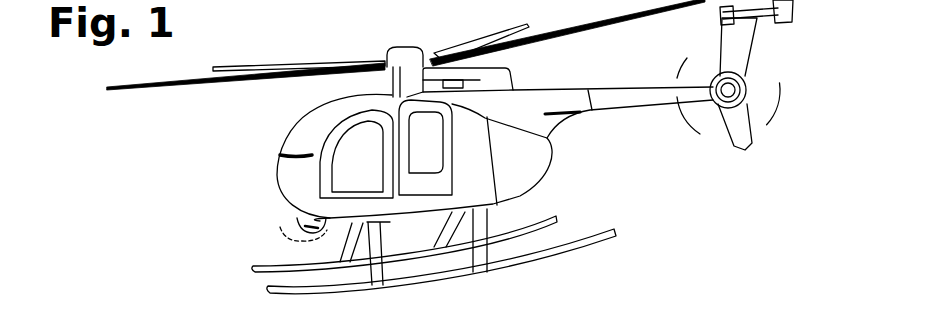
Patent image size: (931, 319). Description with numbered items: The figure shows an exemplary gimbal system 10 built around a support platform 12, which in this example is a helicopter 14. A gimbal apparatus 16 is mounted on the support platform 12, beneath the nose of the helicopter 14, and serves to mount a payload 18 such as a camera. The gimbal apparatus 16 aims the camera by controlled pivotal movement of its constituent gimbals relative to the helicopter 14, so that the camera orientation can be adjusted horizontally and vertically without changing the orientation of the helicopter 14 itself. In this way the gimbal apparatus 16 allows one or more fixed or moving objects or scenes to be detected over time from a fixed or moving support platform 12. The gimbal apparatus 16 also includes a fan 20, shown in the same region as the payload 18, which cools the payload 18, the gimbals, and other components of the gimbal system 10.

The gimbal system 10 is at (188, 152).
The support platform 12 is at (238, 139).
The helicopter 14 is at (303, 114).
The gimbal apparatus 16 is at (288, 214).
The payload 18 is at (297, 220).
The fan 20 is at (327, 243).